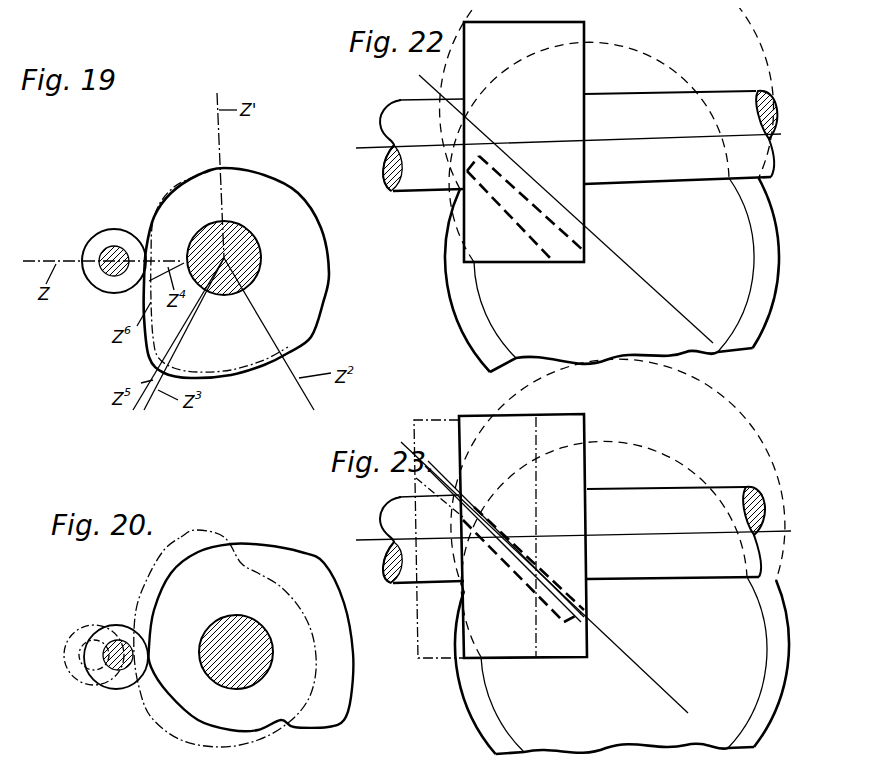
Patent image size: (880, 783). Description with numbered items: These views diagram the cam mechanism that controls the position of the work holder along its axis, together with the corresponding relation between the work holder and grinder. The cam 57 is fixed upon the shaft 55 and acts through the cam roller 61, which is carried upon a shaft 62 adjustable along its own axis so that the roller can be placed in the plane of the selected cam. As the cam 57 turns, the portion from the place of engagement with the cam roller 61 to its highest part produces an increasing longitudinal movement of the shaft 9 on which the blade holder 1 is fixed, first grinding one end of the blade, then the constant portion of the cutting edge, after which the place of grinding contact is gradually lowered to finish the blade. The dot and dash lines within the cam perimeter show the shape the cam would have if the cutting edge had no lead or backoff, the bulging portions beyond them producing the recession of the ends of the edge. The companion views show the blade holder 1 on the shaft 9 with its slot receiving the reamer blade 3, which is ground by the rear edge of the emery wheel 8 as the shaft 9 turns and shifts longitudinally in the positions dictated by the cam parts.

In FIG. 22, the slide block 1 is at (567, 38).
In FIG. 23, the slide block 1 is at (563, 443).
In FIG. 22, the reamer blade 3 is at (528, 232).
In FIG. 23, the reamer blade 3 is at (445, 500).
In FIG. 22, the emery wheel 8 is at (455, 296).
In FIG. 23, the emery wheel 8 is at (467, 697).
In FIG. 22, the shaft 9 is at (400, 110).
In FIG. 23, the shaft 9 is at (382, 505).
In FIG. 19, the shaft 55 is at (243, 247).
In FIG. 20, the shaft 55 is at (230, 630).
In FIG. 19, the cam 57 is at (310, 273).
In FIG. 20, the cam 57 is at (303, 575).
In FIG. 19, the cam roller 61 is at (114, 239).
In FIG. 20, the cam roller 61 is at (115, 627).
In FIG. 19, the shaft 62 is at (118, 264).
In FIG. 20, the shaft 62 is at (117, 662).